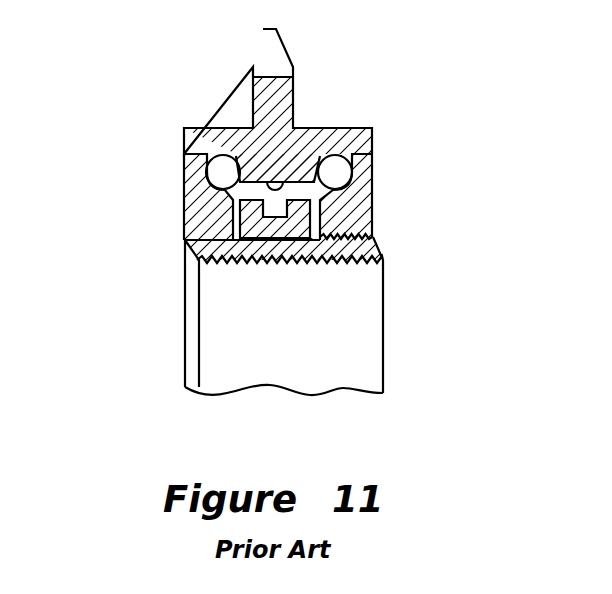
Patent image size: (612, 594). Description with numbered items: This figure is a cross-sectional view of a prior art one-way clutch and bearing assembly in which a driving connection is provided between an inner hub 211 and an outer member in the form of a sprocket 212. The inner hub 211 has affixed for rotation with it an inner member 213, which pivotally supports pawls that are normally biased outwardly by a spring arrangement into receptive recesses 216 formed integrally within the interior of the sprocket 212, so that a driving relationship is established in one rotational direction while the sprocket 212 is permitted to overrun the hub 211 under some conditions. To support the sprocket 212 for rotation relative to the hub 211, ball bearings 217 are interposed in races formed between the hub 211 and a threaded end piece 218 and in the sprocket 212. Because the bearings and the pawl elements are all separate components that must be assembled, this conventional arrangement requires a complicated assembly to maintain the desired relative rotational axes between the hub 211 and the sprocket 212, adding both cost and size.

The inner hub 211 is at (185, 322).
The sprocket 212 is at (207, 127).
The inner member 213 is at (258, 222).
The recesses 216 is at (293, 168).
The ball bearings 217 is at (223, 172).
The threaded end piece 218 is at (367, 198).